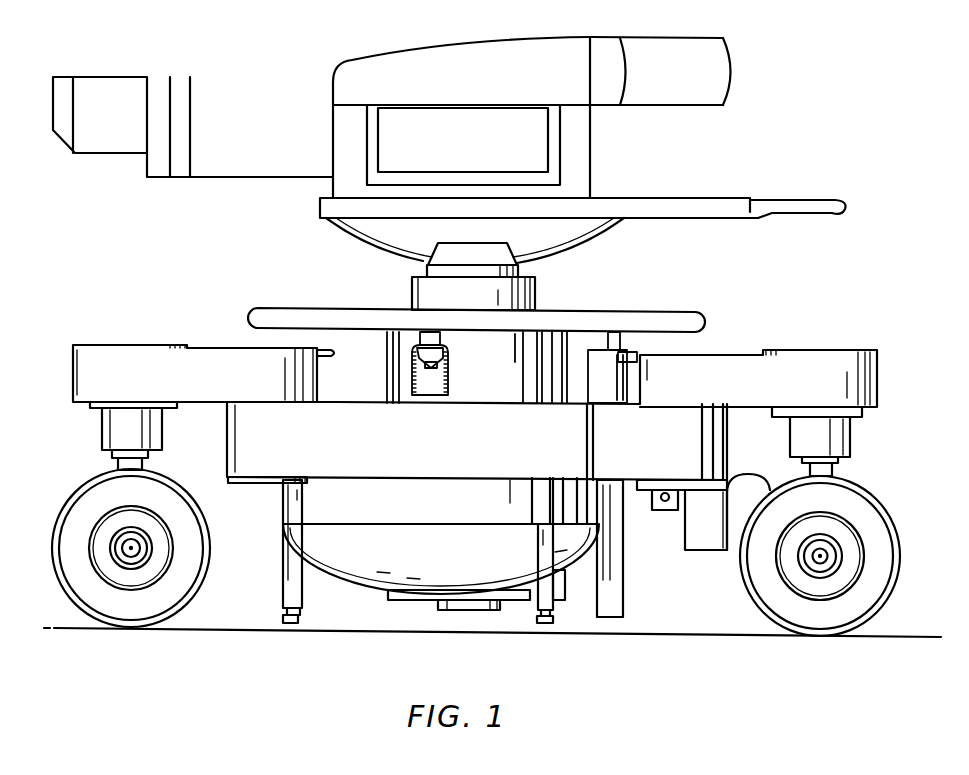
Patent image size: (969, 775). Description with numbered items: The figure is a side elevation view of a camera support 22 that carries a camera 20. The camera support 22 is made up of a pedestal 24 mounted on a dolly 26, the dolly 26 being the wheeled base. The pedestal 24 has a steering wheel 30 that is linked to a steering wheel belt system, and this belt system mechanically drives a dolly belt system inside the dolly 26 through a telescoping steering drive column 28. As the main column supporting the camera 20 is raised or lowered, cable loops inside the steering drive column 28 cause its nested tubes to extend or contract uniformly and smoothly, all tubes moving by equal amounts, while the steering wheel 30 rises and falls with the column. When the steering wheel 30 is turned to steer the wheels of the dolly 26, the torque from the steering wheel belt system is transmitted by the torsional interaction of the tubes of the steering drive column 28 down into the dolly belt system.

The camera 20 is at (577, 141).
The camera support 22 is at (770, 280).
The pedestal 24 is at (338, 270).
The dolly 26 is at (840, 350).
The telescoping steering drive column 28 is at (623, 583).
The steering wheel 30 is at (697, 311).